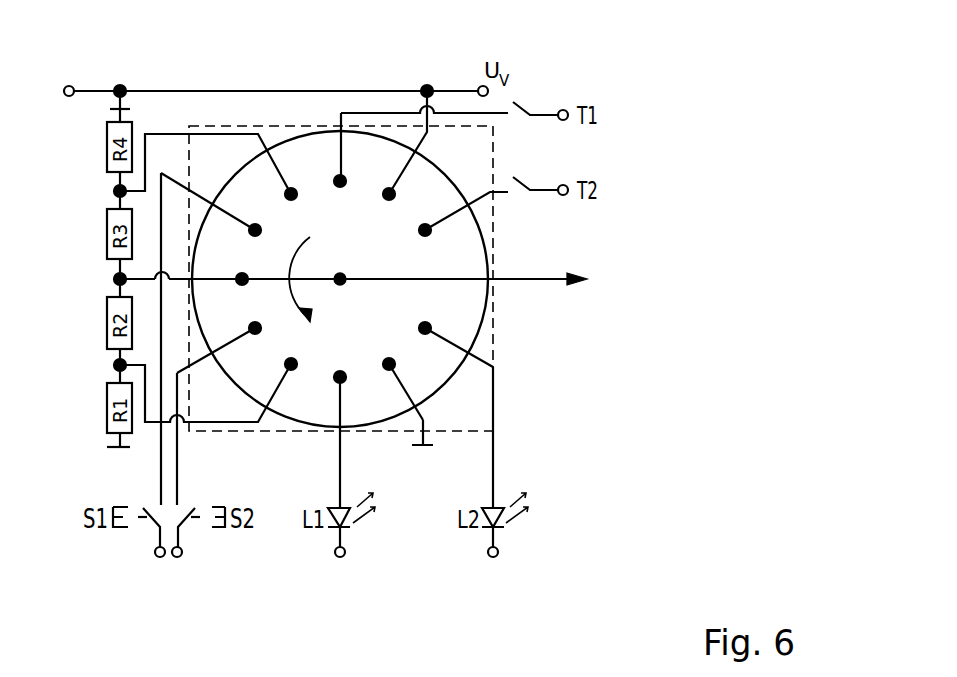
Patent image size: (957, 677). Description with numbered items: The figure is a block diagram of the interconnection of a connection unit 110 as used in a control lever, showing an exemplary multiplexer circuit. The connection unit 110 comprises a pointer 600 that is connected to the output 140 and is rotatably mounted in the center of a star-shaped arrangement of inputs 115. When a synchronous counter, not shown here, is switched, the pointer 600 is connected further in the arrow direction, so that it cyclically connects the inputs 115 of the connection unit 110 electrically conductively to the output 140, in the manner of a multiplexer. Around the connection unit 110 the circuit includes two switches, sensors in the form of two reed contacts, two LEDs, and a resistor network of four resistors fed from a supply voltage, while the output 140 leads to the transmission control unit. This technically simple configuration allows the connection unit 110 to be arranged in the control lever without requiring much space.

The connection unit 110 is at (507, 310).
The inputs 115 is at (424, 140).
The pointer 600 is at (303, 278).
The output 140 is at (530, 282).